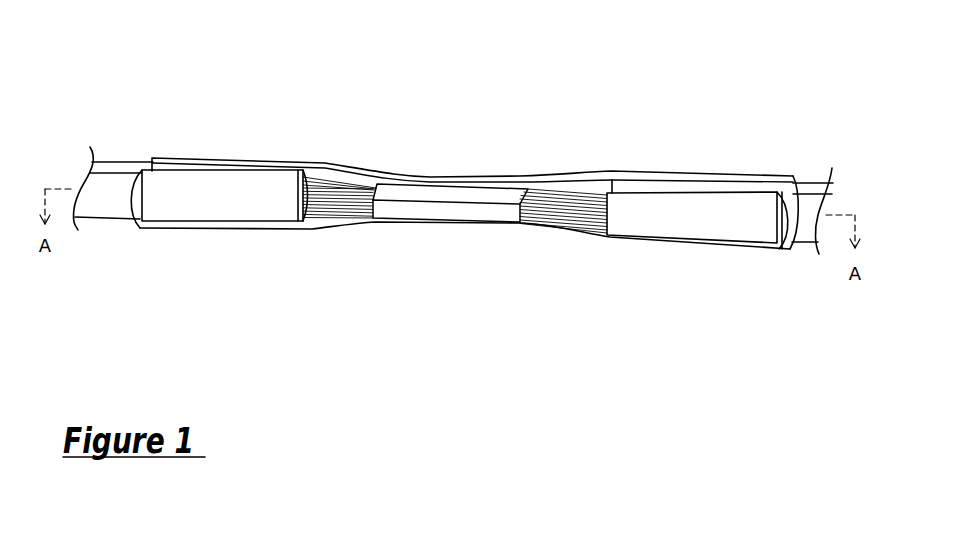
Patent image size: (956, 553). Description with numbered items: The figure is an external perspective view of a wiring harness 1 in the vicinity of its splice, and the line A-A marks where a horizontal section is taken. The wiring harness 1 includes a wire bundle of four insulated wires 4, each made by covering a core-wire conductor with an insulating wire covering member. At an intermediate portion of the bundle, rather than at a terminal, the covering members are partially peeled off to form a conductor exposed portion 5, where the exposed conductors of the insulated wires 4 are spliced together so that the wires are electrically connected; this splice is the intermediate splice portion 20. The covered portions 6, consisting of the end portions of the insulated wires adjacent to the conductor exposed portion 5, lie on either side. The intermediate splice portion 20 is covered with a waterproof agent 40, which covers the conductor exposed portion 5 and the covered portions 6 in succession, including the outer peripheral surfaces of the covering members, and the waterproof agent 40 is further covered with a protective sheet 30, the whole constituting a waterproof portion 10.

The wiring harness 1 is at (151, 100).
The insulated wire 4 is at (122, 167).
The conductor exposed portion 5 is at (330, 190).
The covered portion 6 is at (225, 167).
The waterproof portion 10 is at (447, 163).
The intermediate splice portion 20 is at (443, 224).
The protective sheet 30 is at (205, 231).
The waterproof agent 40 is at (347, 224).